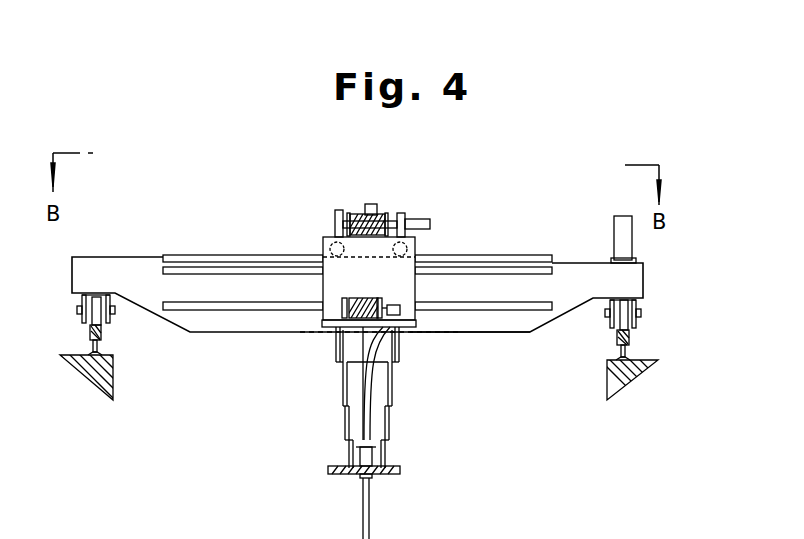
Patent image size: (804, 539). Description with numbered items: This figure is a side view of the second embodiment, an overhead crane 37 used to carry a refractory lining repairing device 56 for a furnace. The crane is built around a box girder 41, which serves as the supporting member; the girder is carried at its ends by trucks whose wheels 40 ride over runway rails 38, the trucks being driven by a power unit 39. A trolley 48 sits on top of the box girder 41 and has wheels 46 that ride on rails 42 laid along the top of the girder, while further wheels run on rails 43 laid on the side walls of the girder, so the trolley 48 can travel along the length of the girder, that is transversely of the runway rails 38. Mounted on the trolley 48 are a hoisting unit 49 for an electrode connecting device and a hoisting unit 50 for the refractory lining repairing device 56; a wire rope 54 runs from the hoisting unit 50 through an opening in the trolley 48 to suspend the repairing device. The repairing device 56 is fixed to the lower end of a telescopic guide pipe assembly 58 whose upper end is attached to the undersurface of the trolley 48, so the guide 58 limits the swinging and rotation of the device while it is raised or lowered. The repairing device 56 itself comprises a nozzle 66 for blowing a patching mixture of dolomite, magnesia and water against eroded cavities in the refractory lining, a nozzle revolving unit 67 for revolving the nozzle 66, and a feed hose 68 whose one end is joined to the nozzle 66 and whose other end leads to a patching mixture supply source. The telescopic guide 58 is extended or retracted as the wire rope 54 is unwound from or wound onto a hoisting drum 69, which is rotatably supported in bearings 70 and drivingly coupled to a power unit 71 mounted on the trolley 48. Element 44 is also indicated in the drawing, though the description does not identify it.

The overhead crane 37 is at (196, 190).
The runway rails 38 is at (628, 340).
The power unit 39 is at (619, 232).
The wheels 40 is at (624, 306).
The box girder 41 is at (500, 322).
The rails 42 is at (486, 254).
The rails 43 is at (536, 275).
The adjusting screw 44 is at (371, 204).
The wheels 46 is at (331, 238).
The trolley 48 is at (335, 272).
The hoisting unit 49 is at (407, 196).
The hoisting unit 50 is at (311, 315).
The wire rope 54 is at (360, 378).
The refractory lining repairing device 56 is at (400, 455).
The telescopic guide pipe assembly 58 is at (346, 416).
The nozzle 66 is at (372, 512).
The nozzle revolving unit 67 is at (358, 456).
The feed hose 68 is at (382, 371).
The hoisting drum 69 is at (342, 322).
The bearings 70 is at (327, 318).
The power unit 71 is at (413, 326).